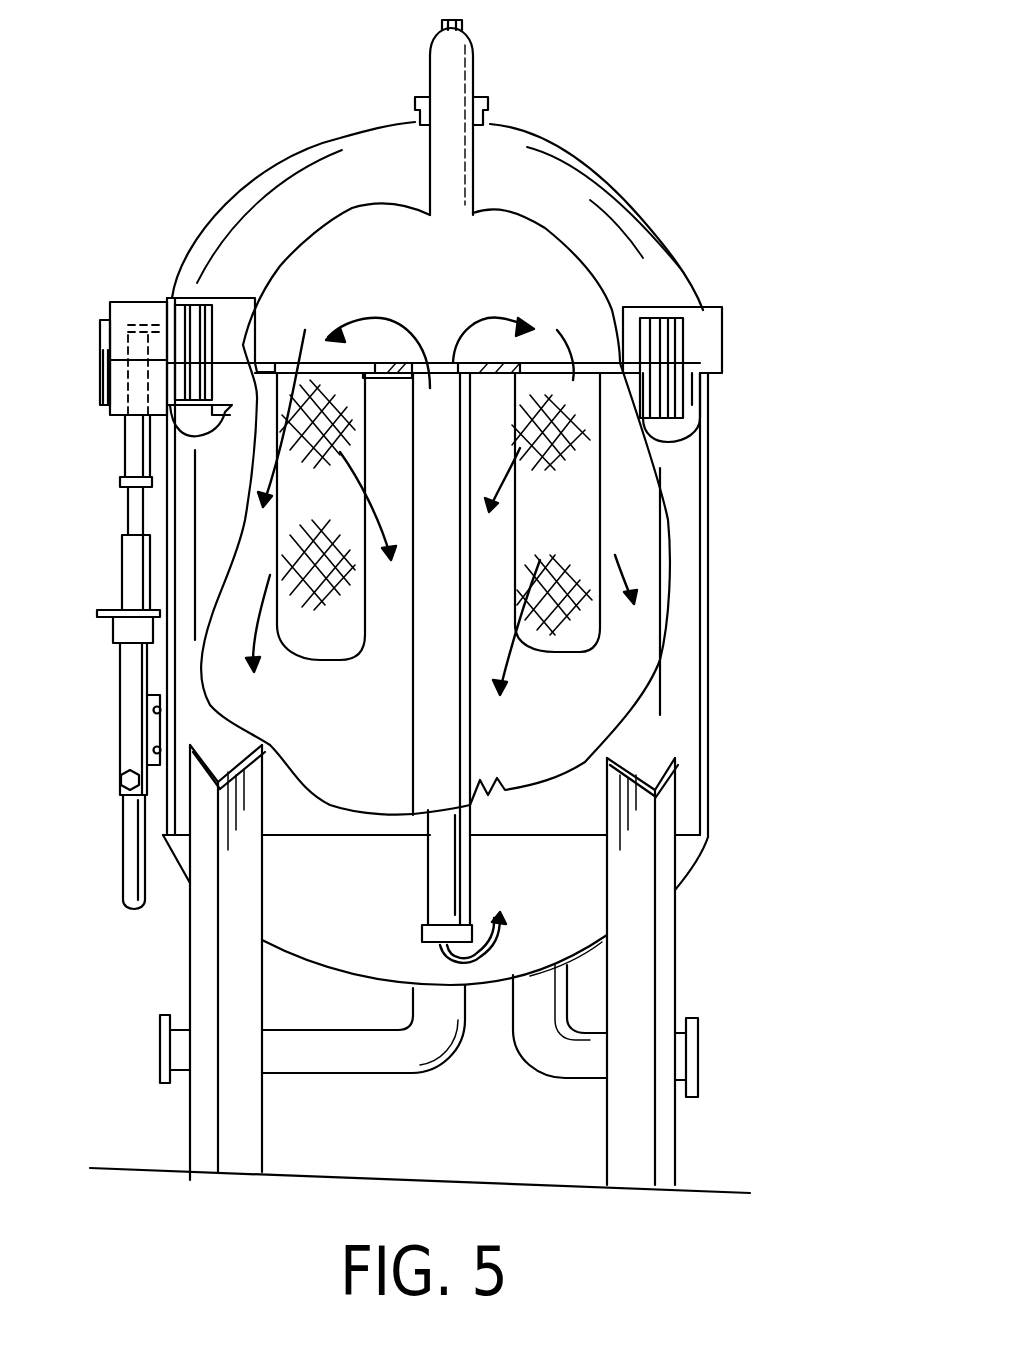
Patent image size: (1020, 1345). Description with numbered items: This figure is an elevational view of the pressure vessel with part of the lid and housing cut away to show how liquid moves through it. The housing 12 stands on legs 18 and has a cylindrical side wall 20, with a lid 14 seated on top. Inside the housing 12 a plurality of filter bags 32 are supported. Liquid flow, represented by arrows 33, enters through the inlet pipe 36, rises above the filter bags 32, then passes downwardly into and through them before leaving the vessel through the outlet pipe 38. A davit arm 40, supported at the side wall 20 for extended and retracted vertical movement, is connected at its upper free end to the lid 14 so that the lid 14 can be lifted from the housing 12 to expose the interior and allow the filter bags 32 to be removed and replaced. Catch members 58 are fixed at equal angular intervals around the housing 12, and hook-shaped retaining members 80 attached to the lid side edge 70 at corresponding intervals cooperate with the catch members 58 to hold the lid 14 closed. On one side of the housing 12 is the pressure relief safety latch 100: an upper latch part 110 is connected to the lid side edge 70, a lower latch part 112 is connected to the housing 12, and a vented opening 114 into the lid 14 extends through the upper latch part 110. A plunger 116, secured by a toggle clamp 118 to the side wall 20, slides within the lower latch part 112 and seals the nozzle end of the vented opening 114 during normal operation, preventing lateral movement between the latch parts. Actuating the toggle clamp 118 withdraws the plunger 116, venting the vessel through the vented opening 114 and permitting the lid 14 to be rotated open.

The housing 12 is at (690, 650).
The lid 14 is at (622, 220).
The legs 18 is at (190, 1135).
The cylindrical side wall 20 is at (685, 482).
The filter bags 32 is at (335, 650).
The arrows 33 is at (383, 306).
The inlet pipe 36 is at (360, 1073).
The outlet pipe 38 is at (560, 1065).
The davit arm 40 is at (455, 58).
The catch members 58 is at (217, 373).
The lid side edge 70 is at (708, 340).
The retaining members 80 is at (195, 423).
The pressure relief safety latch 100 is at (96, 571).
The upper latch part 110 is at (113, 310).
The lower latch part 112 is at (110, 418).
The vented opening 114 is at (135, 300).
The plunger 116 is at (125, 460).
The toggle clamp 118 is at (120, 780).